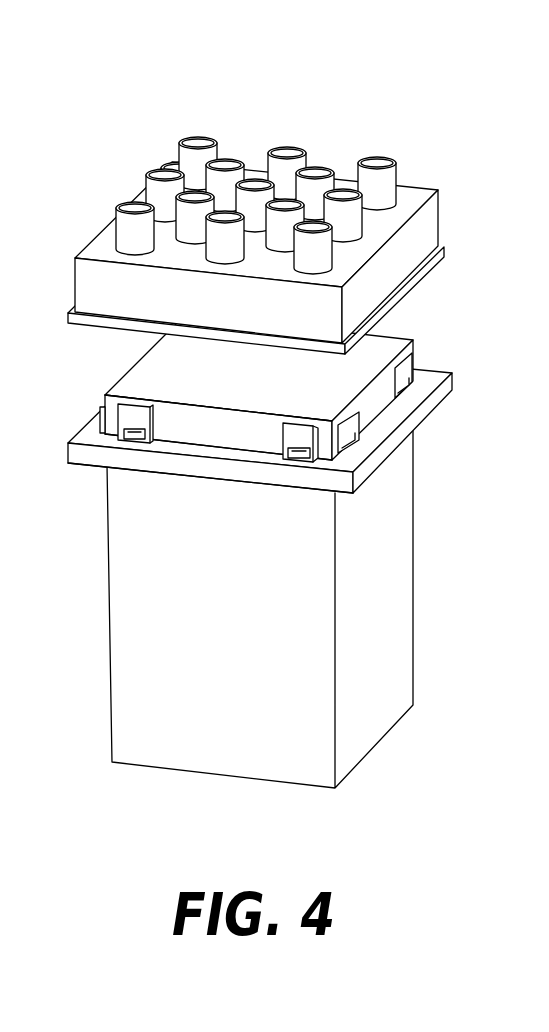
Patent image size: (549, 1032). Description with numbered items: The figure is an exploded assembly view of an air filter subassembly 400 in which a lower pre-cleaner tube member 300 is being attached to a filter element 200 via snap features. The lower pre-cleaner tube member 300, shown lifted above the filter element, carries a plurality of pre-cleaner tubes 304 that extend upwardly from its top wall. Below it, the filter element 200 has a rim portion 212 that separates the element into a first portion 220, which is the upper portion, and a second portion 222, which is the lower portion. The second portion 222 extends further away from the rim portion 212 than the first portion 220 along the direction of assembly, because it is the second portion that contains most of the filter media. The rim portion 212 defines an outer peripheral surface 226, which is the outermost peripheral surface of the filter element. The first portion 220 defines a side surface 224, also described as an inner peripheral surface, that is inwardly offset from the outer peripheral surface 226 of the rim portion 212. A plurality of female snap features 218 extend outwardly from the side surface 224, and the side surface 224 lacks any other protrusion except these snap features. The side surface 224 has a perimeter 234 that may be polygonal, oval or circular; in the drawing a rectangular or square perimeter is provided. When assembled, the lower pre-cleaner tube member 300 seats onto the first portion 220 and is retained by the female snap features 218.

The air filter subassembly 400 is at (365, 99).
The lower pre-cleaner tube member 300 is at (423, 187).
The pre-cleaner tubes 304 is at (199, 139).
The filter element 200 is at (267, 533).
The rim portion 212 is at (419, 424).
The female snap features 218 is at (417, 357).
The first portion 220 is at (384, 398).
The second portion 222 is at (385, 647).
The side surface 224 is at (233, 440).
The outer peripheral surface 226 is at (306, 482).
The perimeter 234 is at (275, 412).